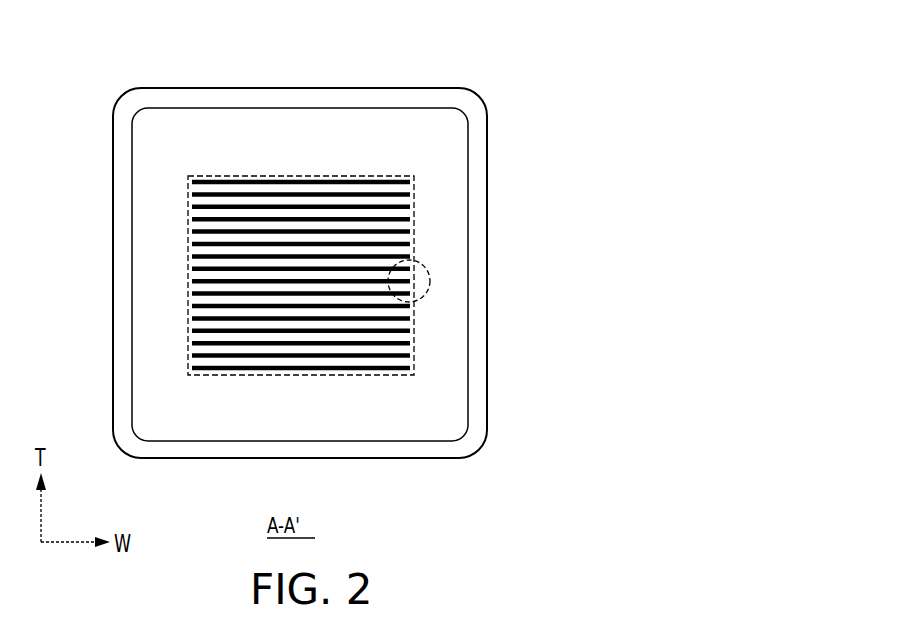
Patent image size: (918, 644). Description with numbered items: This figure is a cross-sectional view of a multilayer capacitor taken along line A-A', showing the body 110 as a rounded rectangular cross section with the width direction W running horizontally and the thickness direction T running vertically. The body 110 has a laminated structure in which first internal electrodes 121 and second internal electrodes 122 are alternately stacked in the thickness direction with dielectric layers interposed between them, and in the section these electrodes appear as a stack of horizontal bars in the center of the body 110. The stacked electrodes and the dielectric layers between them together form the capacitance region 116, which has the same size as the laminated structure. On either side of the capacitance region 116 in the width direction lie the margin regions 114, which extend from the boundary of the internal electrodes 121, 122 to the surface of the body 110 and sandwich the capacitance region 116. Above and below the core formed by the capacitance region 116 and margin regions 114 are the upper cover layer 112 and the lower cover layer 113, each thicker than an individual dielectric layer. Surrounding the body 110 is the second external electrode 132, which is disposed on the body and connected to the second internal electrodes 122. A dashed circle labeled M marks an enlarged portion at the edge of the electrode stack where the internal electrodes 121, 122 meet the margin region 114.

The body 110 is at (407, 90).
The upper cover layer 112 is at (368, 122).
The lower cover layer 113 is at (333, 412).
The margin region 114 is at (157, 291).
The capacitance region 116 is at (303, 160).
The first internal electrode 121 is at (203, 180).
The second internal electrode 122 is at (243, 190).
The second external electrode 132 is at (478, 125).
The enlarged portion M is at (430, 272).